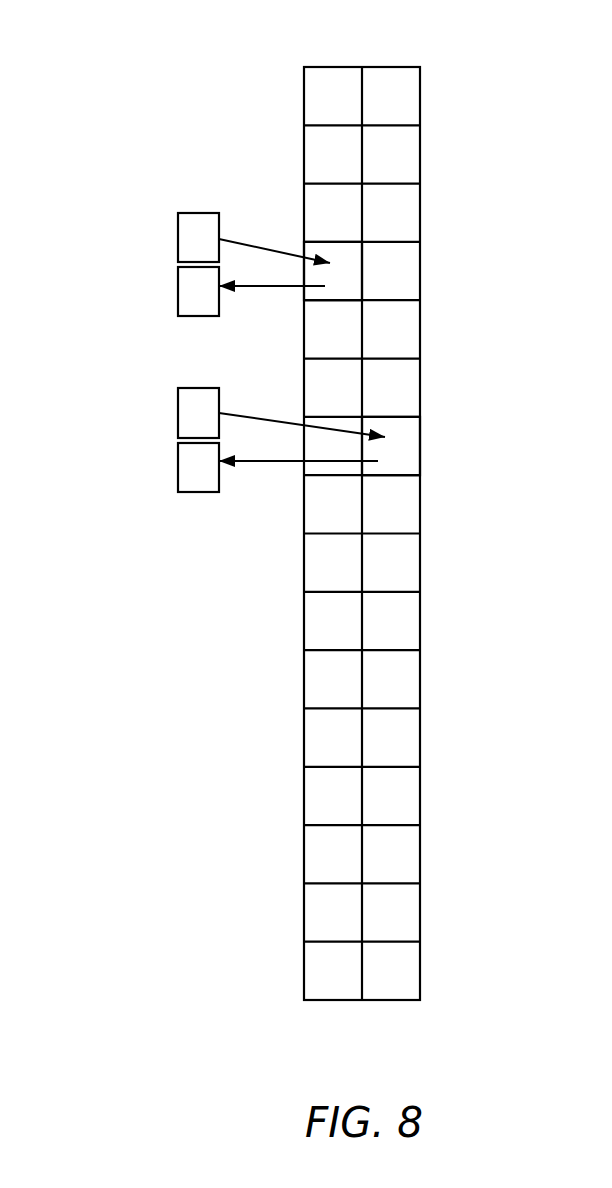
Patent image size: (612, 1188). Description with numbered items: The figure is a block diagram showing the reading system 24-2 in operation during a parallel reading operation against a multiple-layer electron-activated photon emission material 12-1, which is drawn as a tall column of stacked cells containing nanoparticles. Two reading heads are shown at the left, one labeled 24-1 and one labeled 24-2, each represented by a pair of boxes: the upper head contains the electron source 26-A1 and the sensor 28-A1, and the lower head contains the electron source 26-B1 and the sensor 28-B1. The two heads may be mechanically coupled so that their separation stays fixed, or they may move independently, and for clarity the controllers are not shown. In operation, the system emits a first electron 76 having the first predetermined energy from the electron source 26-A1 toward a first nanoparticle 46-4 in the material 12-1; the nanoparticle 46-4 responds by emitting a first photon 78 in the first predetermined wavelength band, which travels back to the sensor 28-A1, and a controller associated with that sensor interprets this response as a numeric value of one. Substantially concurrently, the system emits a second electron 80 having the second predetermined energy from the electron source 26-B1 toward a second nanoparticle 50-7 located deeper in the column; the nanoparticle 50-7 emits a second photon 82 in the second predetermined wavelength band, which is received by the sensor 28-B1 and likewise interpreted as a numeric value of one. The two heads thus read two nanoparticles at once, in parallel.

The electron-activated photon emission material 12-1 is at (375, 500).
The first pixel 24-1 is at (132, 244).
The system 24-2 is at (132, 420).
The electron source 26-A1 is at (178, 237).
The sensor 28-A1 is at (178, 291).
The electron source 26-B1 is at (178, 409).
The sensor 28-B1 is at (178, 465).
The first nanoparticle 46-4 is at (349, 257).
The second nanoparticle 50-7 is at (412, 449).
The first electron 76 is at (280, 252).
The first photon 78 is at (281, 290).
The second electron 80 is at (280, 413).
The second photon 82 is at (281, 466).